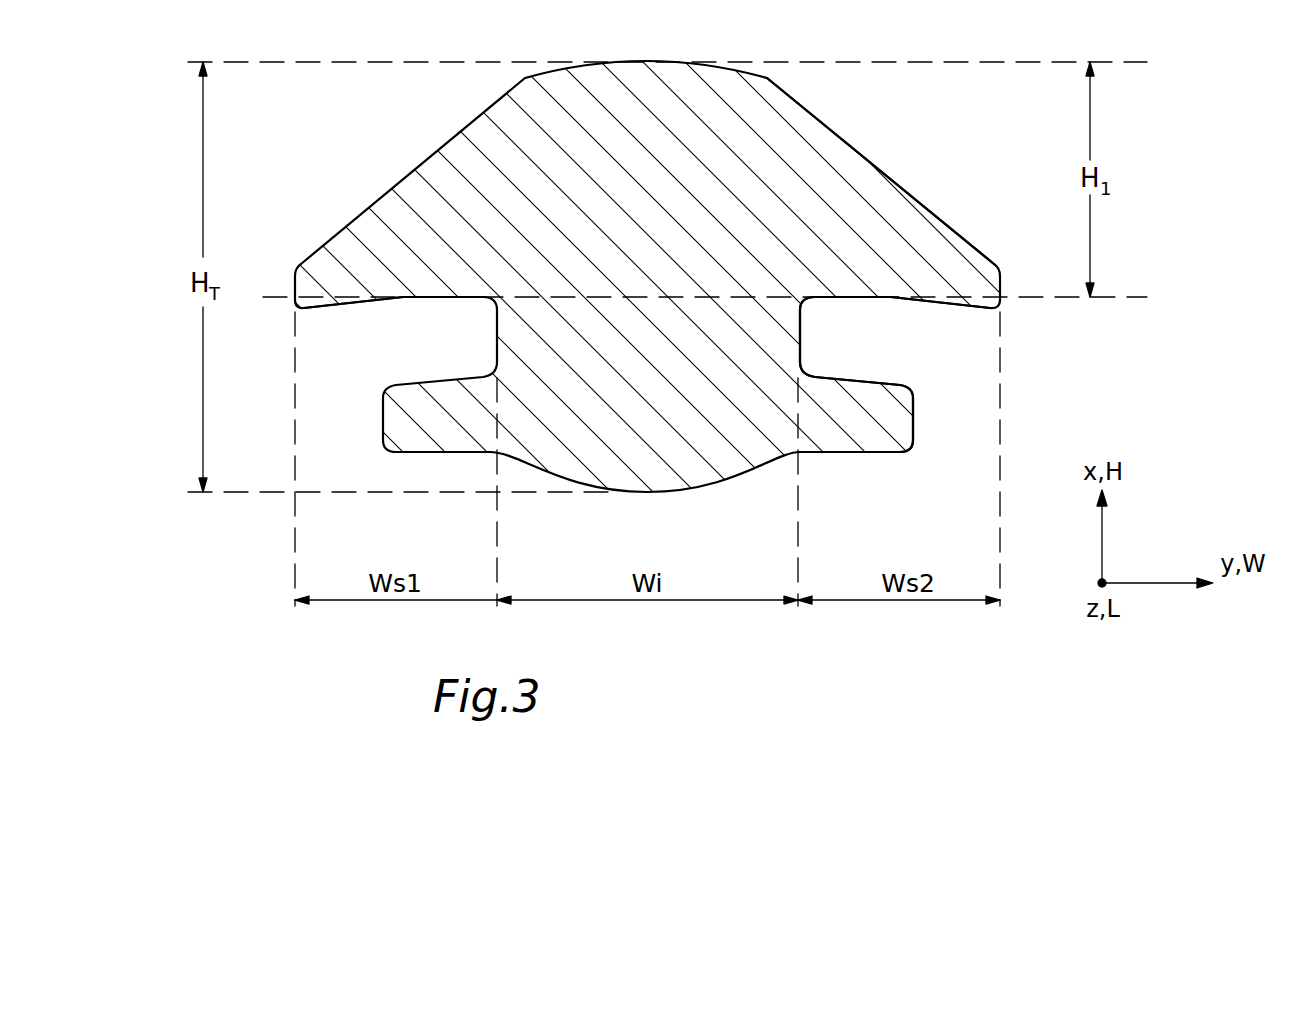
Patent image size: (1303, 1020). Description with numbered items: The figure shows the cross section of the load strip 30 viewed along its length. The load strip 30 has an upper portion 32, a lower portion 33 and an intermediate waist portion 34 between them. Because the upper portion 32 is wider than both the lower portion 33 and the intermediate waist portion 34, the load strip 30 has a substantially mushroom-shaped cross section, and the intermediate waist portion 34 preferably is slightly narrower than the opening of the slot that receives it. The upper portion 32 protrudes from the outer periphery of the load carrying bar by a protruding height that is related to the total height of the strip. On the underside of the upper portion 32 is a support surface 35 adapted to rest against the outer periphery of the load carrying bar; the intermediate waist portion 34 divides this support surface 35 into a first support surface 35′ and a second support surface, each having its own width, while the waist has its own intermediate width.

The load strip 30 is at (430, 148).
The upper portion 32 is at (890, 164).
The lower portion 33 is at (915, 417).
The intermediate waist portion 34 is at (802, 333).
The support surface 35 is at (345, 310).
The first support surface 35′ is at (404, 302).